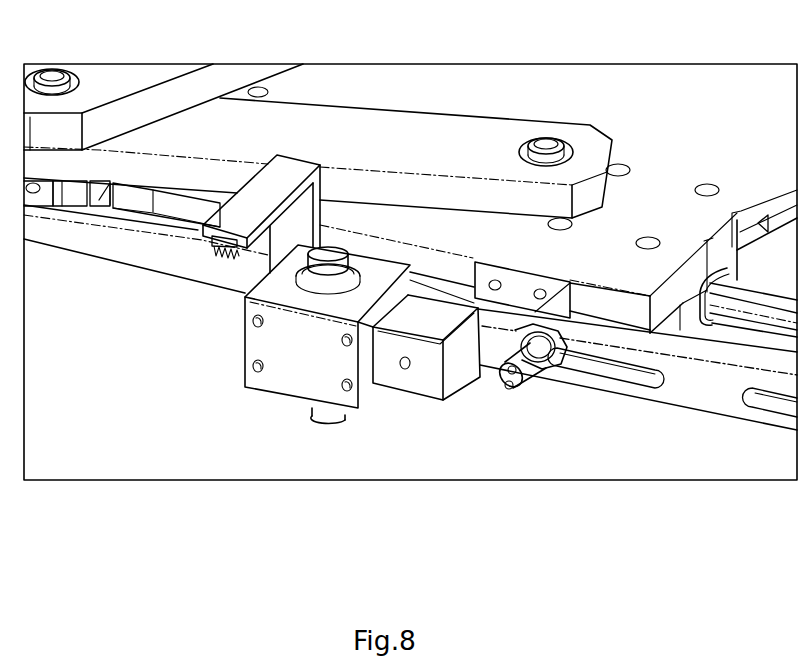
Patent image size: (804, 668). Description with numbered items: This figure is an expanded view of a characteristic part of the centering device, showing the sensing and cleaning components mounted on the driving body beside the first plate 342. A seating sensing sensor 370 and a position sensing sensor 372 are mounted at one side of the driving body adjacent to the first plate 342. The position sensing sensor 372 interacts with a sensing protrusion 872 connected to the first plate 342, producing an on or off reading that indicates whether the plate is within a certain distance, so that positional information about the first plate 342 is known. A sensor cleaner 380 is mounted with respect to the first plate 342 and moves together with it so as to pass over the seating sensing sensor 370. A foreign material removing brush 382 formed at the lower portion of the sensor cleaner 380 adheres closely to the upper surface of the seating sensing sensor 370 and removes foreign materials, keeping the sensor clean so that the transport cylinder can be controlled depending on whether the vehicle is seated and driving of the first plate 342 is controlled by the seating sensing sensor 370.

The first plate 342 is at (605, 78).
The seating sensing sensor 370 is at (330, 268).
The position sensing sensor 372 is at (533, 376).
The sensor cleaner 380 is at (287, 168).
The foreign material removing brush 382 is at (209, 257).
The sensing protrusion 872 is at (568, 312).